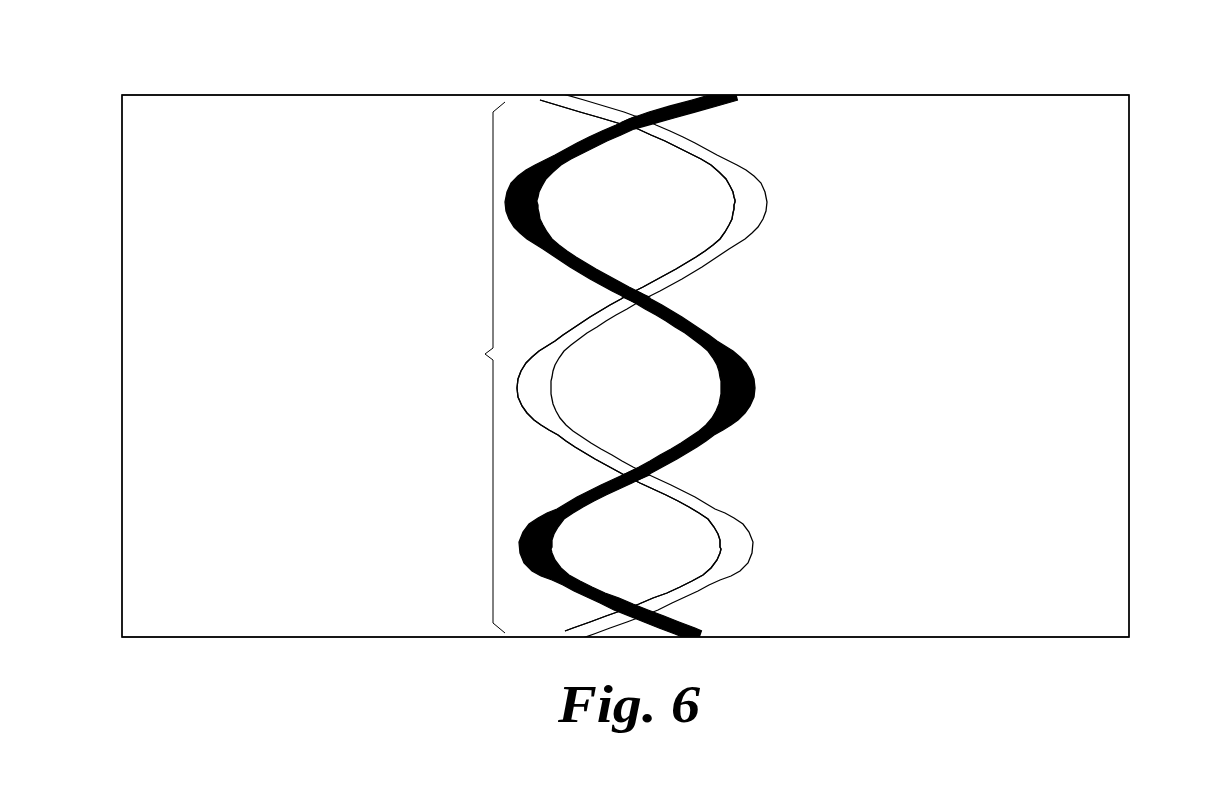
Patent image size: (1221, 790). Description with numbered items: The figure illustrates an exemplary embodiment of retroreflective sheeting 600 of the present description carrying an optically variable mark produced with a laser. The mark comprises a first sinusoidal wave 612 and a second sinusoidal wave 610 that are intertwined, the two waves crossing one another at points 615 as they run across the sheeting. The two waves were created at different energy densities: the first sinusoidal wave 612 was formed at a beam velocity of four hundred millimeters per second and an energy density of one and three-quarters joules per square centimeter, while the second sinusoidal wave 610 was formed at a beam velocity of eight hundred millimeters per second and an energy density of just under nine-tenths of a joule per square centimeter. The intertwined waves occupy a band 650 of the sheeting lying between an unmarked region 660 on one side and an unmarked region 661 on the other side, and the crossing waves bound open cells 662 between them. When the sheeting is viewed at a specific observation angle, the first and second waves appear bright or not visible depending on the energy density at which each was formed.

The patterned sheet 600 is at (1062, 65).
The second sinusoidal wave 610 is at (746, 186).
The first sinusoidal wave 612 is at (745, 390).
The intersection 615 is at (636, 121).
The patterned region 650 is at (600, 366).
The first side portion 660 is at (150, 260).
The second side portion 661 is at (1098, 368).
The opening 662 is at (655, 342).